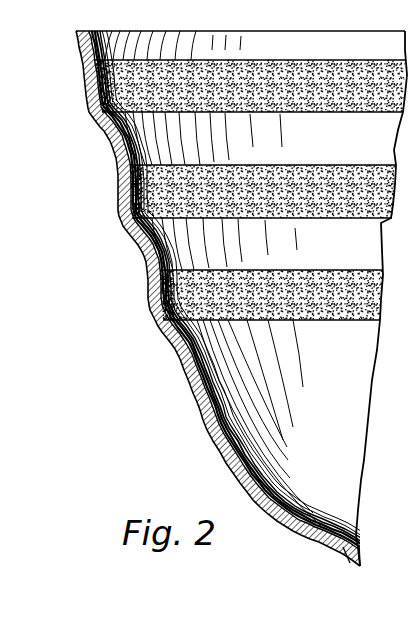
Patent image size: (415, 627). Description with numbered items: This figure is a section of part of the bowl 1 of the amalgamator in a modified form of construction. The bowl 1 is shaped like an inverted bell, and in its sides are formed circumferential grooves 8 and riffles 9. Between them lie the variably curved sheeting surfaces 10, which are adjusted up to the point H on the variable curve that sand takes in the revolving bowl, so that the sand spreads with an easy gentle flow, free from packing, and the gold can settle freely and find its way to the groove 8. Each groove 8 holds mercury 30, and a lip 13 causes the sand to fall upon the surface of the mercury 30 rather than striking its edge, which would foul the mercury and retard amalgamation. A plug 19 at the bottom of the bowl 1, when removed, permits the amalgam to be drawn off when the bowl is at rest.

The bowl 1 is at (233, 445).
The groove 8 is at (86, 73).
The riffle 9 is at (78, 43).
The variably curved sheeting surface 10 is at (113, 145).
The lip 13 is at (101, 121).
The plug 19 is at (347, 557).
The mercury 30 is at (89, 98).
The point H is at (155, 130).